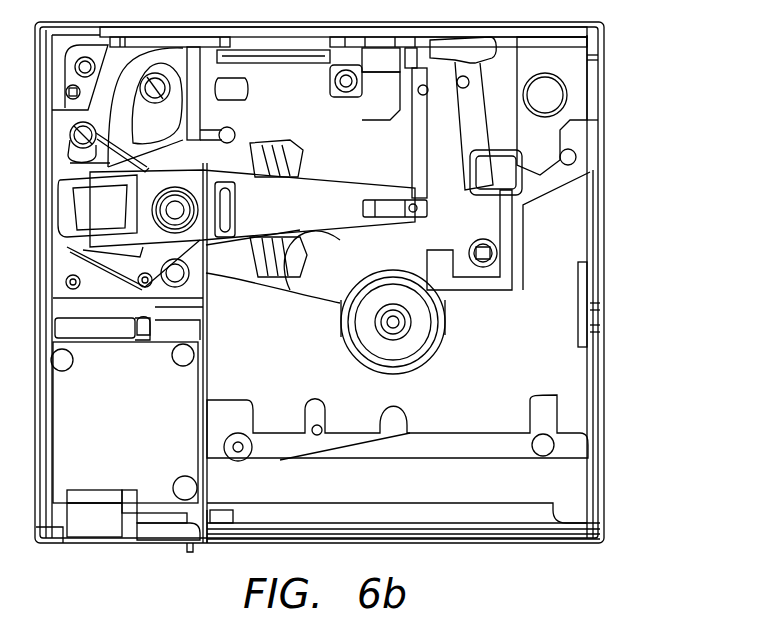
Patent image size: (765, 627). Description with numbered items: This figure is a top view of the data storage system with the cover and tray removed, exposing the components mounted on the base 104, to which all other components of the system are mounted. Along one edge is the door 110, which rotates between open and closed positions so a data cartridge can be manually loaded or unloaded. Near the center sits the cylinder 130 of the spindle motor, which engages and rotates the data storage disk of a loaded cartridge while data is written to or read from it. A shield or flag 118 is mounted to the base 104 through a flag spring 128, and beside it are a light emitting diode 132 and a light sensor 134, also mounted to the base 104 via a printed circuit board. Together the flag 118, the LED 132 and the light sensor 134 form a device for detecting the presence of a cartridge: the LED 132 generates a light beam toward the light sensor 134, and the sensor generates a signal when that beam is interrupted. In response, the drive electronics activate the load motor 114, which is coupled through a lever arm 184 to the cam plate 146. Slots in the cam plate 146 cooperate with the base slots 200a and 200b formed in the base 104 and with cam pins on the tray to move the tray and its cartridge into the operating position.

The base 104 is at (606, 257).
The door 110 is at (473, 533).
The load motor 114 is at (136, 430).
The flag 118 is at (368, 50).
The flag spring 128 is at (343, 62).
The cylinder 130 is at (438, 325).
The light emitting diode 132 is at (377, 50).
The light sensor 134 is at (392, 50).
The cam plate 146 is at (283, 345).
The lever arm 184 is at (285, 448).
The base slot 200a is at (197, 318).
The base slot 200b is at (597, 317).